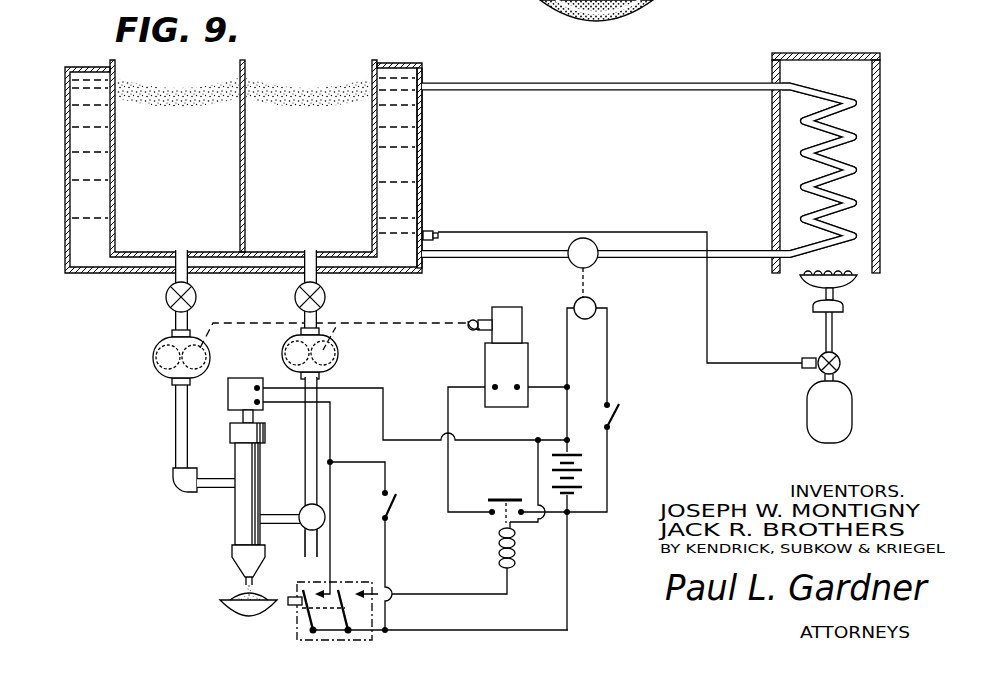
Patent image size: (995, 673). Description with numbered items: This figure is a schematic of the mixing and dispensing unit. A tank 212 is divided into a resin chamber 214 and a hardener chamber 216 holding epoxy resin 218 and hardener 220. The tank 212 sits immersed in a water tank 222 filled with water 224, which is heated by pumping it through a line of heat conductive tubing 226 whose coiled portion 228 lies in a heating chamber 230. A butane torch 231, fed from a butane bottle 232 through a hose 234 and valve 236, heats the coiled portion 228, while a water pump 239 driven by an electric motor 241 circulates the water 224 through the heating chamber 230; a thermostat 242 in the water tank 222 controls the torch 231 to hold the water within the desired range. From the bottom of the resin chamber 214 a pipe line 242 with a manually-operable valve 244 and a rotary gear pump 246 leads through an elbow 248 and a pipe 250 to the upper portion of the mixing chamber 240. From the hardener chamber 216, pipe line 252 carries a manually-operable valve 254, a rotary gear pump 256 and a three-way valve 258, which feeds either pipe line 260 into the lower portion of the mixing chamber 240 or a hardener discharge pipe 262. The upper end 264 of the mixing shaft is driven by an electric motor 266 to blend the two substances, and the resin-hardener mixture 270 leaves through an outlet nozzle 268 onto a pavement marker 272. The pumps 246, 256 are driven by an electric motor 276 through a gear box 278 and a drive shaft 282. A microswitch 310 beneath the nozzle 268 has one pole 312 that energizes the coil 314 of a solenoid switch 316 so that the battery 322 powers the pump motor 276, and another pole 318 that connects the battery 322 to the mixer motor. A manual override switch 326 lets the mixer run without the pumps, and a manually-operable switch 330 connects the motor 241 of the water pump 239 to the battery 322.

The tank 212 is at (385, 62).
The resin chamber 214 is at (196, 81).
The hardener chamber 216 is at (333, 81).
The epoxy resin 218 is at (202, 221).
The hardener 220 is at (344, 221).
The water tank 222 is at (421, 118).
The water 224 is at (413, 173).
The heat conductive tubing 226 is at (601, 89).
The coiled portion 228 is at (850, 136).
The heating chamber 230 is at (878, 80).
The butane torch 231 is at (855, 282).
The butane bottle 232 is at (848, 406).
The hose 234 is at (833, 333).
The valve 236 is at (842, 360).
The water pump 239 is at (598, 262).
The electric motor 241 is at (597, 304).
The pipe line 242 is at (408, 242).
The manually-operable valve 244 is at (166, 300).
The rotary gear pump 246 is at (156, 358).
The elbow 248 is at (174, 480).
The pipe 250 is at (212, 489).
The pipe line 252 is at (312, 428).
The manually-operable valve 254 is at (326, 296).
The rotary gear pump 256 is at (338, 357).
The three-way valve 258 is at (323, 508).
The pipe line 260 is at (302, 490).
The hardener discharge pipe 262 is at (313, 543).
The upper end of the mixing shaft 264 is at (270, 347).
The electric motor 266 is at (243, 415).
The outlet nozzle 268 is at (233, 563).
The resin-hardener mixture 270 is at (243, 594).
The pavement marker 272 is at (238, 609).
The mixing chamber 240 is at (236, 517).
The electric motor 276 is at (488, 366).
The gear box 278 is at (510, 313).
The drive shaft 282 is at (476, 317).
The microswitch 310 is at (349, 583).
The pole 312 is at (345, 609).
The coil 314 is at (513, 556).
The solenoid switch 316 is at (512, 497).
The pole 318 is at (307, 614).
The battery 322 is at (584, 478).
The manual override switch 326 is at (394, 512).
The manually-operable switch 330 is at (618, 410).